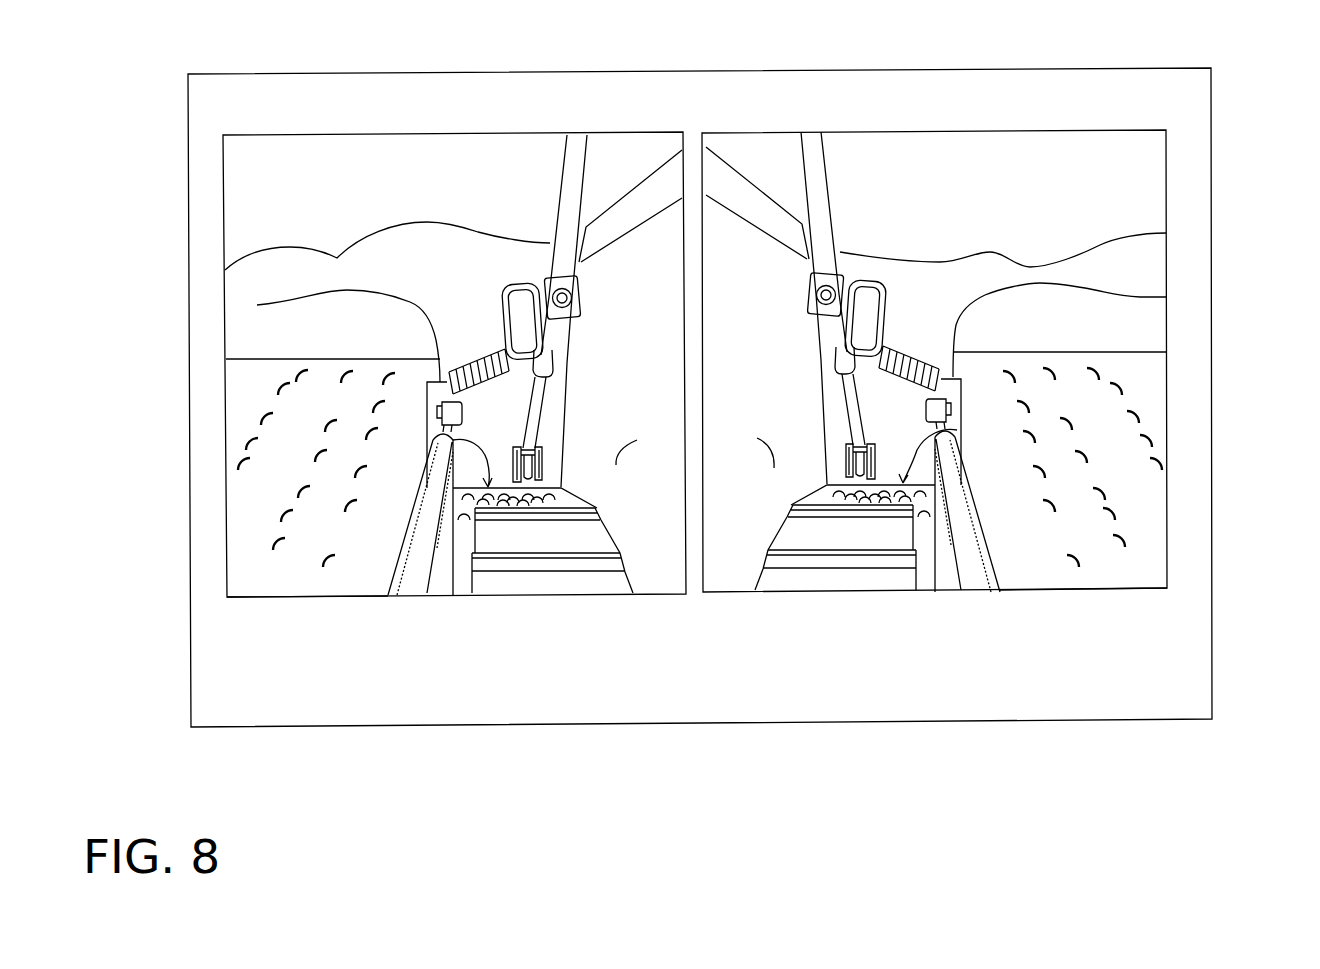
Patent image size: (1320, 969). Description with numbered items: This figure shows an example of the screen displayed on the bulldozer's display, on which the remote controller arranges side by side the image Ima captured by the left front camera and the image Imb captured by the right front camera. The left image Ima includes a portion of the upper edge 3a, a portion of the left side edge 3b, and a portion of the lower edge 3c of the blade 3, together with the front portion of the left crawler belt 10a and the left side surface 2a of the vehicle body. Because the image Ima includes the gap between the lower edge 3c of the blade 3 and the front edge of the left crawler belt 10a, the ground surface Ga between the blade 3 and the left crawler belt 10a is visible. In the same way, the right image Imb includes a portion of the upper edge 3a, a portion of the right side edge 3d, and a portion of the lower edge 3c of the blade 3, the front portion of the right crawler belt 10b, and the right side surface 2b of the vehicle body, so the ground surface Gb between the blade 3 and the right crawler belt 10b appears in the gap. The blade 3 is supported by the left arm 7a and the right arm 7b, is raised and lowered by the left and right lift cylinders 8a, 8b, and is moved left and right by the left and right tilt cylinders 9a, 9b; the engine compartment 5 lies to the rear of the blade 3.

The blade 3 is at (493, 415).
The upper edge 3a is at (257, 305).
The left side edge 3b is at (425, 417).
The lower edge 3c is at (533, 490).
The right side edge 3d is at (967, 412).
The engine compartment 5 is at (629, 144).
The left lift cylinder 8a is at (563, 203).
The right lift cylinder 8b is at (827, 203).
The left tilt cylinder 9a is at (422, 525).
The right tilt cylinder 9b is at (973, 518).
The left arm 7a is at (397, 576).
The right arm 7b is at (1000, 568).
The left crawler belt 10a is at (517, 585).
The right crawler belt 10b is at (837, 580).
The left side surface 2a is at (616, 465).
The right side surface 2b is at (774, 468).
The ground surface Ga is at (453, 440).
The ground surface Gb is at (957, 430).
The image Ima is at (360, 597).
The image Imb is at (993, 593).